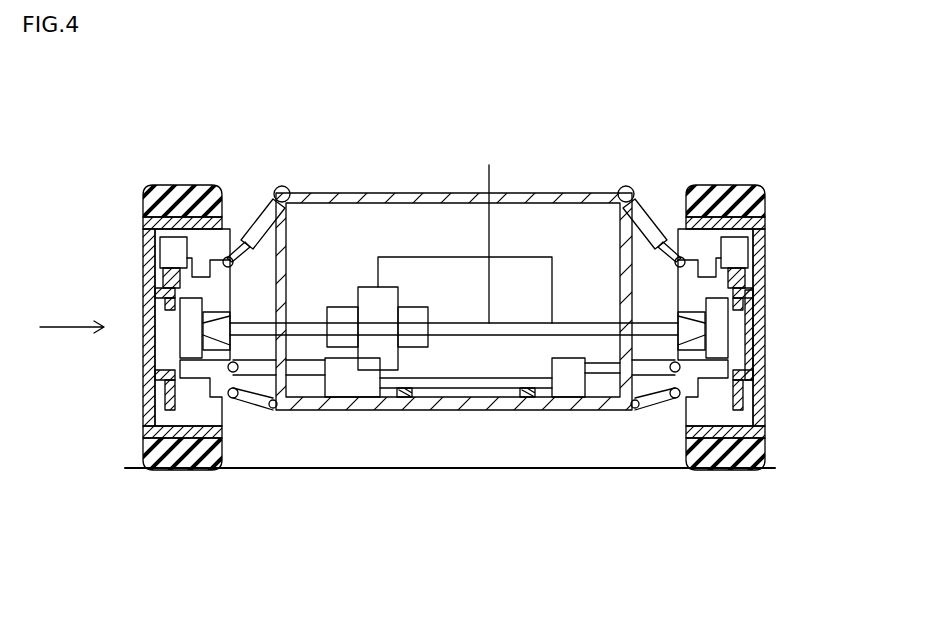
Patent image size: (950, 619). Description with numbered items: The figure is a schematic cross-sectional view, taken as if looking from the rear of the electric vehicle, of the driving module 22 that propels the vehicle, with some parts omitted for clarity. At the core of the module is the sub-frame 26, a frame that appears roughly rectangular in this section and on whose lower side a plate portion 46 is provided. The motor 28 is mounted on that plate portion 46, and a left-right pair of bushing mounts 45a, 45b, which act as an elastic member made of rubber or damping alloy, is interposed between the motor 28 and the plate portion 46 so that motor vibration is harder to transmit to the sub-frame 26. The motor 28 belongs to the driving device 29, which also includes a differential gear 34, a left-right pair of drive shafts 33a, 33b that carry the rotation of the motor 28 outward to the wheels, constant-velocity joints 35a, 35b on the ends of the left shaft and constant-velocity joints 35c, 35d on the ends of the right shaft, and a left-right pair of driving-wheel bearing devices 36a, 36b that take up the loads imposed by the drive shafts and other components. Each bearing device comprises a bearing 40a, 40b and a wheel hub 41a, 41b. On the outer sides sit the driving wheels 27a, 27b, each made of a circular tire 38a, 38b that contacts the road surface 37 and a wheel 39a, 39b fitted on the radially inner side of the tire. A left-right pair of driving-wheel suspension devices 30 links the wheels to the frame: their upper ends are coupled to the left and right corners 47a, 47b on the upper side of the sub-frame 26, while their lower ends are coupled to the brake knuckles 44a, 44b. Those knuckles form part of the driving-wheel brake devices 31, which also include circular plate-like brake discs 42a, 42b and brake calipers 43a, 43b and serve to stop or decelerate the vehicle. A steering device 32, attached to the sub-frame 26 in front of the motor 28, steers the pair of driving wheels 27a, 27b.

The driving module 22 is at (678, 107).
The sub-frame 26 is at (690, 205).
The driving wheel 27a is at (120, 327).
The driving wheel 27b is at (787, 327).
The motor 28 is at (479, 356).
The driving device 29 is at (445, 350).
The driving-wheel suspension device 30 is at (254, 198).
The driving-wheel brake device 31 is at (453, 292).
The steering device 32 is at (370, 200).
The drive shaft 33a is at (312, 376).
The drive shaft 33b is at (549, 436).
The differential gear 34 is at (384, 360).
The constant-velocity joint 35a is at (262, 405).
The constant-velocity joint 35b is at (340, 365).
The constant-velocity joint 35c is at (650, 402).
The constant-velocity joint 35d is at (415, 317).
The driving-wheel bearing device 36a is at (453, 377).
The driving-wheel bearing device 36b is at (669, 346).
The road surface 37 is at (776, 468).
The tire 38a is at (150, 455).
The tire 38b is at (758, 455).
The wheel 39a is at (152, 396).
The wheel 39b is at (756, 398).
The bearing 40a is at (213, 340).
The bearing 40b is at (695, 340).
The wheel hub 41a is at (190, 336).
The wheel hub 41b is at (718, 336).
The brake disc 42a is at (168, 302).
The brake disc 42b is at (784, 334).
The brake caliper 43a is at (172, 250).
The brake caliper 43b is at (746, 252).
The brake knuckle 44a is at (172, 281).
The brake knuckle 44b is at (742, 282).
The bushing mount 45a is at (458, 315).
The bushing mount 45b is at (490, 233).
The plate portion 46 is at (340, 318).
The corner 47a is at (292, 190).
The corner 47b is at (618, 192).